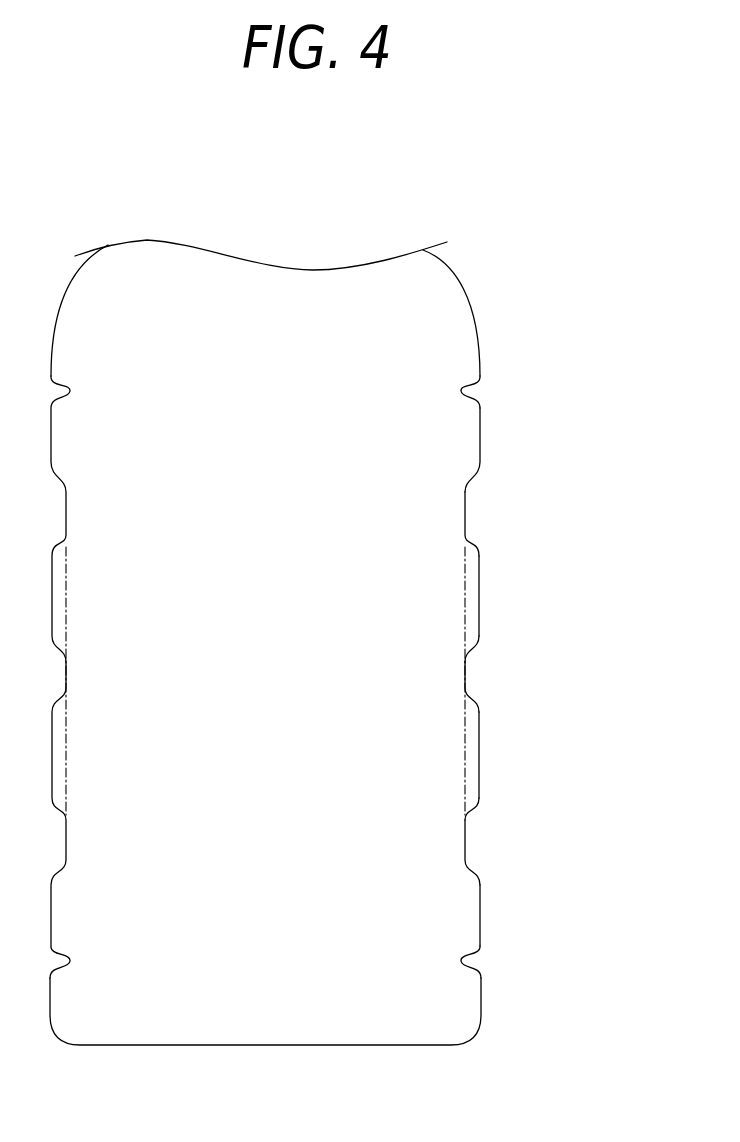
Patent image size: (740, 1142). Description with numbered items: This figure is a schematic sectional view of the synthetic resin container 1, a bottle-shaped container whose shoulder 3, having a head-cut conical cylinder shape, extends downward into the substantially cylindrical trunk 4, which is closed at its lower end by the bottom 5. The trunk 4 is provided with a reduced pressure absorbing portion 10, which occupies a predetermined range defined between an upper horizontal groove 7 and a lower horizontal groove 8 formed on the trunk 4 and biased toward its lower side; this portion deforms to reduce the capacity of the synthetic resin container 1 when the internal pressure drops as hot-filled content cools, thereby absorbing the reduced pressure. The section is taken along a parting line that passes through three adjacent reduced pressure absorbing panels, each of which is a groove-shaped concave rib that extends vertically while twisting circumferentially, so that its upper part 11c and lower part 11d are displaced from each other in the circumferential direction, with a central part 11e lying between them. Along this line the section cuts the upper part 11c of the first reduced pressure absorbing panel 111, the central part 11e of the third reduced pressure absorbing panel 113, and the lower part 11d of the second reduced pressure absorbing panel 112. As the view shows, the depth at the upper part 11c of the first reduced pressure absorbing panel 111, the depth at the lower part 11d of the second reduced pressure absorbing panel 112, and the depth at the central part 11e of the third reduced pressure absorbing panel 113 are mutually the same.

The synthetic resin container 1 is at (548, 302).
The shoulder 3 is at (471, 304).
The trunk 4 is at (517, 487).
The bottom 5 is at (387, 1046).
The upper horizontal groove 7 is at (462, 391).
The lower horizontal groove 8 is at (462, 961).
The reduced pressure absorbing portion 10 is at (525, 560).
The upper part 11c is at (472, 491).
The lower part 11d is at (473, 840).
The central part 11e is at (473, 673).
The first reduced pressure absorbing panel 111 is at (472, 537).
The second reduced pressure absorbing panel 112 is at (475, 822).
The third reduced pressure absorbing panel 113 is at (478, 658).